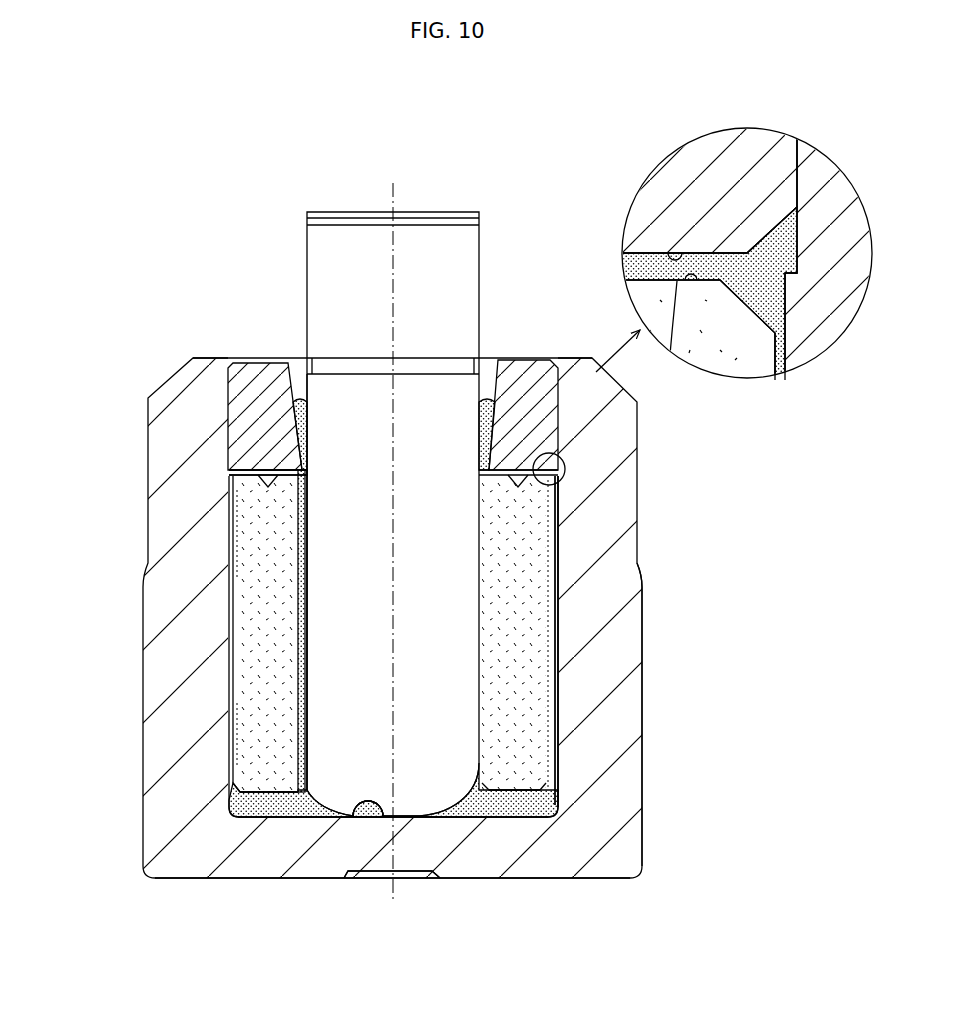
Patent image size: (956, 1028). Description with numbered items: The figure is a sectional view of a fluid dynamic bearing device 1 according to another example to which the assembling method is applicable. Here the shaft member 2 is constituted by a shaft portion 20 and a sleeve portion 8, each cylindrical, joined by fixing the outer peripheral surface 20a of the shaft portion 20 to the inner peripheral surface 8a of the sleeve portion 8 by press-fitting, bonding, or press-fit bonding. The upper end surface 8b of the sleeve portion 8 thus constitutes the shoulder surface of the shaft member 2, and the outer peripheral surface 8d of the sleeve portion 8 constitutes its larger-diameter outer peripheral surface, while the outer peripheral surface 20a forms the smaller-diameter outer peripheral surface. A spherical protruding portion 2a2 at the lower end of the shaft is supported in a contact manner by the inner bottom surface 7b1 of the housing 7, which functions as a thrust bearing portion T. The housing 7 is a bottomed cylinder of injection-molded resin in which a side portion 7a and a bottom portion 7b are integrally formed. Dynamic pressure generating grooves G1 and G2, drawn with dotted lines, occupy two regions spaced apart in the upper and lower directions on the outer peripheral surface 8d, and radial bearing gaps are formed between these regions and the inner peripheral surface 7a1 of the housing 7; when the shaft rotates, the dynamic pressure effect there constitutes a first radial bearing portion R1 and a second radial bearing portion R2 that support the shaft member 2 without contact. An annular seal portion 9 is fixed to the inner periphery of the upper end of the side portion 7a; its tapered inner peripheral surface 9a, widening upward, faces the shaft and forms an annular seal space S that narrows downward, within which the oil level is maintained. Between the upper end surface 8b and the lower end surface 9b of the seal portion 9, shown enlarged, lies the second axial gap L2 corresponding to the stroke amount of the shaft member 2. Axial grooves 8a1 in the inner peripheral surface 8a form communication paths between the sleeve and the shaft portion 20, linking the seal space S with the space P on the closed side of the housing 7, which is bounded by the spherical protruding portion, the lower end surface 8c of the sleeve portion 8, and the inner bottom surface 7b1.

The fluid dynamic bearing device 1 is at (236, 228).
The shaft member 2 is at (304, 258).
The shaft portion 20 is at (460, 265).
The outer peripheral surface of the shaft portion 20a is at (305, 605).
The spherical protruding portion 2a2 is at (318, 820).
The thrust bearing portion T is at (366, 802).
The seal space S is at (300, 392).
The housing 7 is at (646, 577).
The side portion 7a is at (612, 727).
The bottom portion 7b is at (467, 862).
The inner bottom surface 7b1 is at (275, 812).
The inner peripheral surface of the housing 7a1 is at (543, 765).
The sleeve portion 8 is at (528, 624).
The inner peripheral surface of the sleeve portion 8a is at (452, 788).
The axial grooves 8a1 is at (305, 686).
The upper end surface of the sleeve portion 8b is at (247, 470).
The lower end surface of the sleeve portion 8c is at (525, 795).
The outer peripheral surface of the sleeve portion 8d is at (555, 687).
The seal portion 9 is at (528, 385).
The inner peripheral surface of the seal portion 9a is at (489, 372).
The lower end surface of the seal portion 9b is at (552, 510).
The space on the closed side of the housing P is at (479, 809).
The first radial bearing portion R1 is at (227, 527).
The second radial bearing portion R2 is at (227, 748).
The dynamic pressure generating grooves G1 is at (228, 557).
The dynamic pressure generating grooves G2 is at (230, 725).
The second axial gap L2 is at (622, 280).